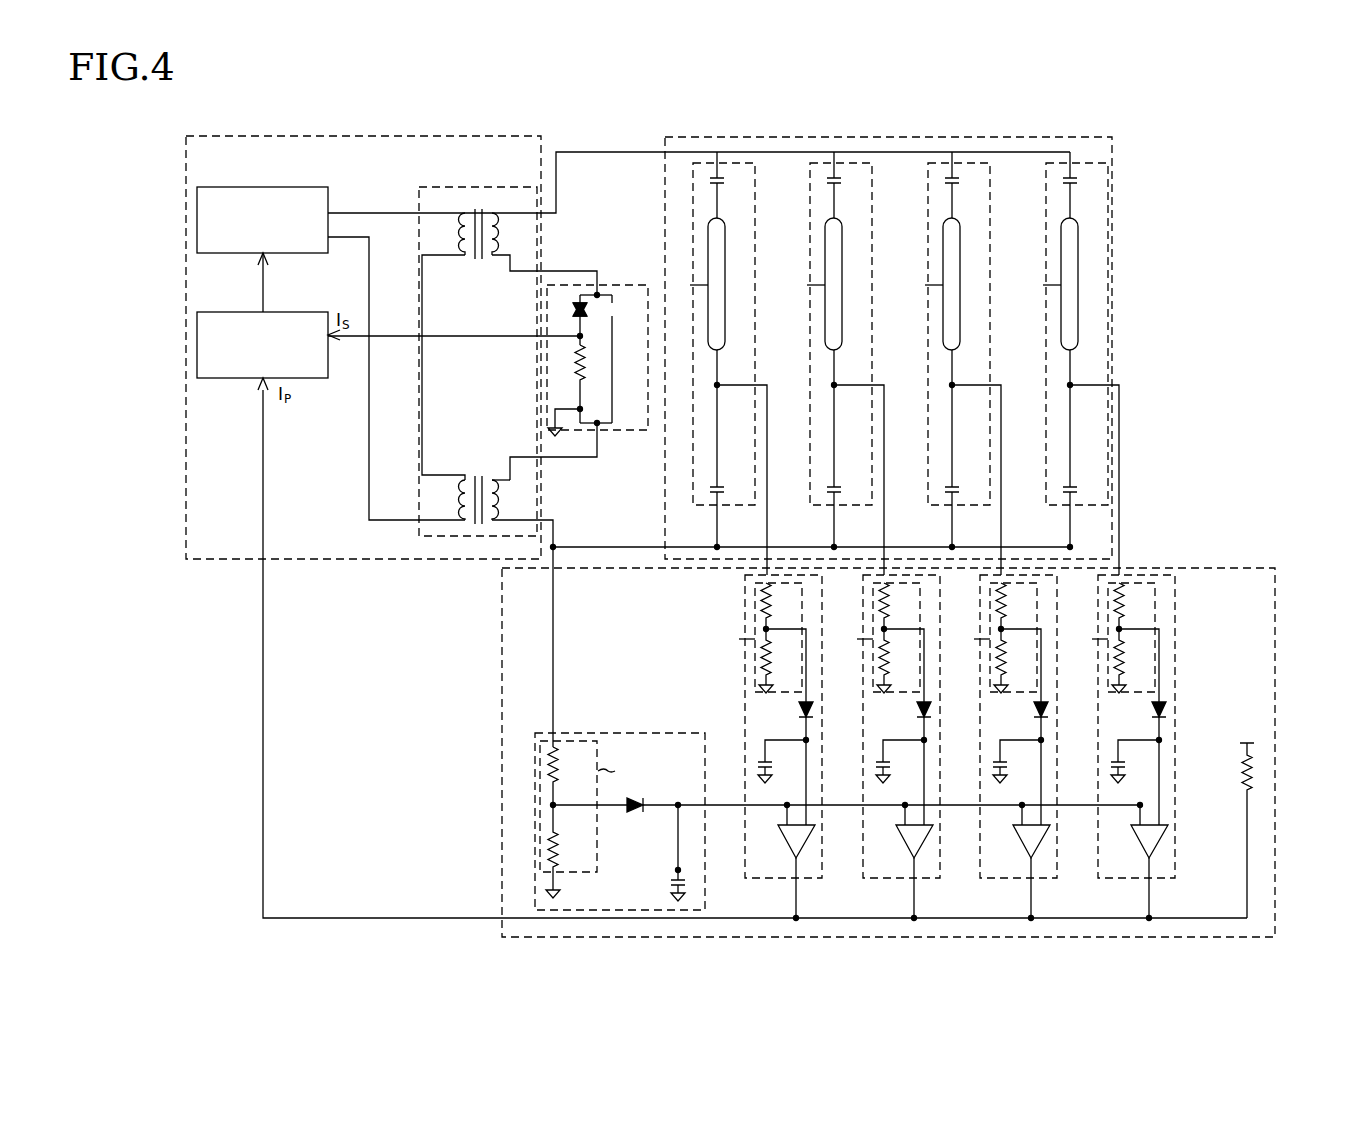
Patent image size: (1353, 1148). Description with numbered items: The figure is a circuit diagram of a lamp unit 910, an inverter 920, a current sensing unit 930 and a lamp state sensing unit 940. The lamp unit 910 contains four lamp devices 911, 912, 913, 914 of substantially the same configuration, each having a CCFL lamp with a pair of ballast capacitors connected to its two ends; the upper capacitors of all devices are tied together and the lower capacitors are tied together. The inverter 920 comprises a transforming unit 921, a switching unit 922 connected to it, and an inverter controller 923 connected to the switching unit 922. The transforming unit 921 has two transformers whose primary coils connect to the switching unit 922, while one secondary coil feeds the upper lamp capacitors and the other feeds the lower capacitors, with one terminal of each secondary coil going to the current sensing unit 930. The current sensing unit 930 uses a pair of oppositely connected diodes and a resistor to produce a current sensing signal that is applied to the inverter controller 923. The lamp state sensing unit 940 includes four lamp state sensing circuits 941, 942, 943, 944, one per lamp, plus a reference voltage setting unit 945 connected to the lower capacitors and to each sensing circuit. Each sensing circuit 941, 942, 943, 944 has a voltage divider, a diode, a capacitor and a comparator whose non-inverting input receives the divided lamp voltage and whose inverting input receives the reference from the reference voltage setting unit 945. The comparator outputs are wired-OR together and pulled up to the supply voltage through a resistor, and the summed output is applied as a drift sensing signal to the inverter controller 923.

The lamp unit 910 is at (888, 137).
The lamp device 911 is at (720, 163).
The lamp device 912 is at (838, 163).
The lamp device 913 is at (974, 163).
The lamp device 914 is at (1075, 163).
The inverter 920 is at (362, 136).
The transforming unit 921 is at (482, 187).
The switching unit 922 is at (292, 187).
The inverter controller 923 is at (292, 312).
The current sensing unit 930 is at (609, 286).
The lamp state sensing unit 940 is at (1275, 757).
The lamp state sensing circuit 941 is at (809, 880).
The lamp state sensing circuit 942 is at (927, 880).
The lamp state sensing circuit 943 is at (1044, 880).
The lamp state sensing circuit 944 is at (1162, 880).
The reference voltage setting unit 945 is at (618, 733).